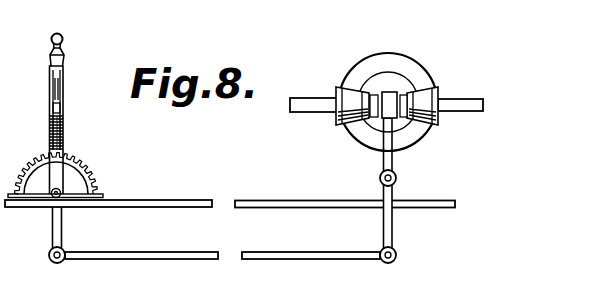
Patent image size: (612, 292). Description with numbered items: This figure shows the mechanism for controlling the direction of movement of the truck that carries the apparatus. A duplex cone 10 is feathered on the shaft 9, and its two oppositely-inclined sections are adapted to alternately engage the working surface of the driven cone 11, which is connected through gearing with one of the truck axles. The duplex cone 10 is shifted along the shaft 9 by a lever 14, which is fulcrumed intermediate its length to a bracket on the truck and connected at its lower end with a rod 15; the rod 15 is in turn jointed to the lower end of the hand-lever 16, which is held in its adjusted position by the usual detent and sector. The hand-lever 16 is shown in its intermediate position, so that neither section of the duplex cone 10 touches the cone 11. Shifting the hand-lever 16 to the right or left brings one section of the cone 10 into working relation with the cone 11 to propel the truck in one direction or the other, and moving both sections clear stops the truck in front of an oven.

The shaft 9 is at (463, 98).
The duplex cone 10 is at (424, 98).
The cone 11 is at (404, 50).
The lever 14 is at (391, 172).
The rod 15 is at (243, 252).
The hand-lever 16 is at (63, 128).